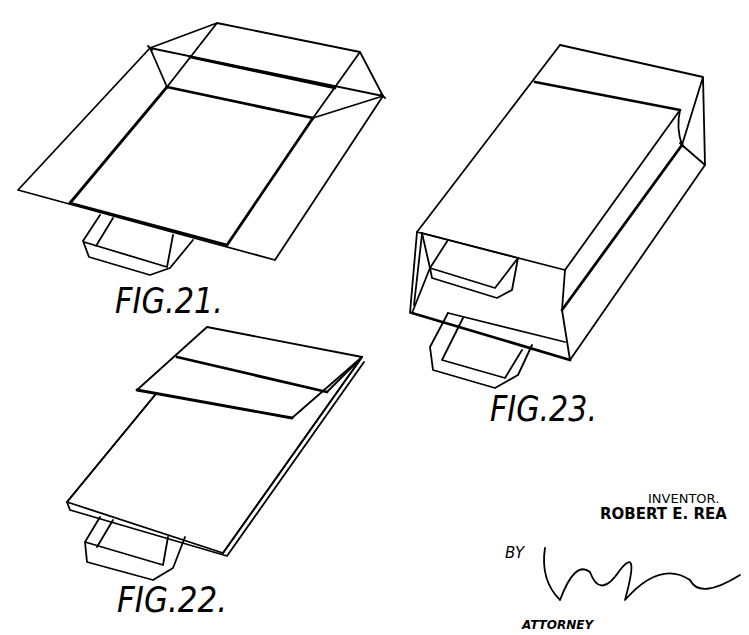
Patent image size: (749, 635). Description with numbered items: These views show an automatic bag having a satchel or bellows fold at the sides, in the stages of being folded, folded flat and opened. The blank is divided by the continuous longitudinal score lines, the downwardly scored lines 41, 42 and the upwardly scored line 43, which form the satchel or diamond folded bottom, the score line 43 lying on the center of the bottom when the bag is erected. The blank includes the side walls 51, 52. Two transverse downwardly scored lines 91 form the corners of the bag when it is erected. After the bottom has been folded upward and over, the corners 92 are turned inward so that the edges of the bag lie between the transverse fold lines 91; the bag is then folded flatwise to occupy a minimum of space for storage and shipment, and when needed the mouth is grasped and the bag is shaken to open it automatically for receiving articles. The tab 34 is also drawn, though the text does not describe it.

In FIG. 21, the locking tab 34 is at (78, 257).
In FIG. 22, the locking tab 34 is at (77, 555).
In FIG. 23, the locking tab 34 is at (452, 301).
In FIG. 21, the downwardly scored line 41 is at (247, 105).
In FIG. 22, the downwardly scored line 41 is at (230, 405).
In FIG. 23, the downwardly scored line 41 is at (608, 55).
In FIG. 21, the downwardly scored line 42 is at (333, 47).
In FIG. 22, the downwardly scored line 42 is at (308, 350).
In FIG. 21, the upwardly scored line 43 is at (310, 82).
In FIG. 22, the upwardly scored line 43 is at (240, 372).
In FIG. 21, the side wall 51 is at (191, 166).
In FIG. 22, the side wall 51 is at (215, 456).
In FIG. 23, the side wall 51 is at (548, 190).
In FIG. 23, the side wall 52 is at (490, 296).
In FIG. 21, the downwardly scored lines 91 is at (282, 165).
In FIG. 22, the downwardly scored lines 91 is at (297, 445).
In FIG. 23, the downwardly scored lines 91 is at (677, 208).
In FIG. 21, the corners 92 is at (404, 90).
In FIG. 23, the corners 92 is at (683, 145).